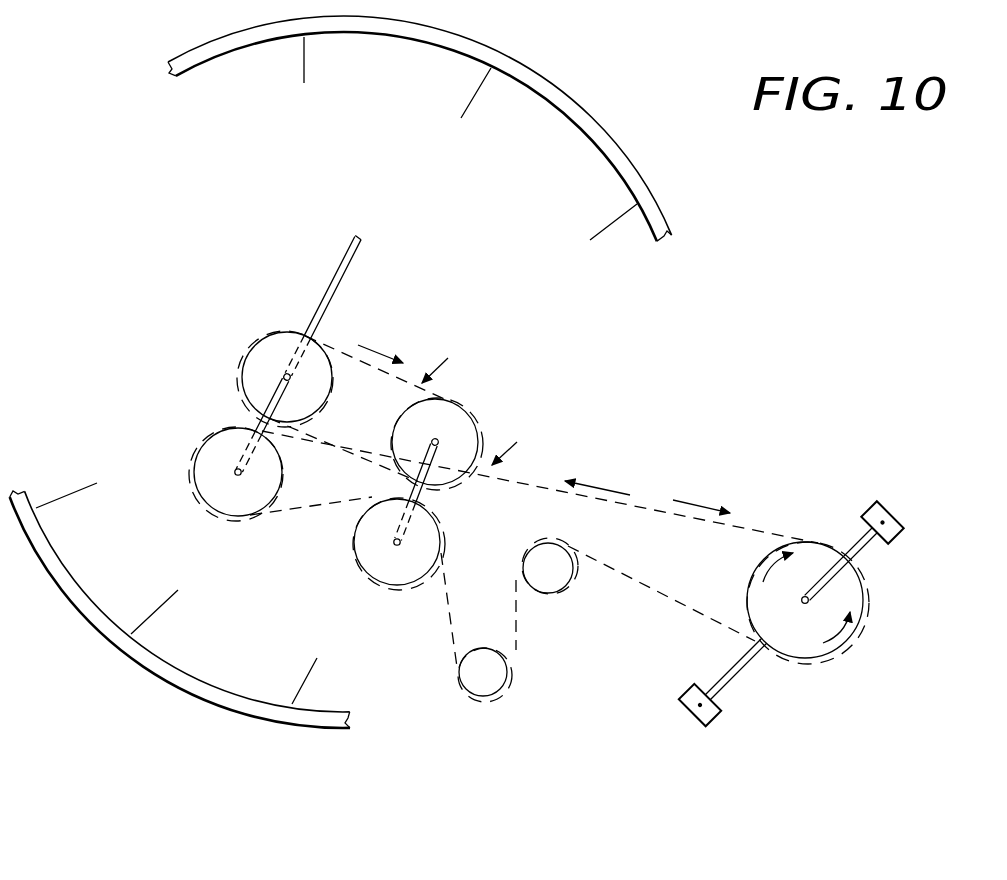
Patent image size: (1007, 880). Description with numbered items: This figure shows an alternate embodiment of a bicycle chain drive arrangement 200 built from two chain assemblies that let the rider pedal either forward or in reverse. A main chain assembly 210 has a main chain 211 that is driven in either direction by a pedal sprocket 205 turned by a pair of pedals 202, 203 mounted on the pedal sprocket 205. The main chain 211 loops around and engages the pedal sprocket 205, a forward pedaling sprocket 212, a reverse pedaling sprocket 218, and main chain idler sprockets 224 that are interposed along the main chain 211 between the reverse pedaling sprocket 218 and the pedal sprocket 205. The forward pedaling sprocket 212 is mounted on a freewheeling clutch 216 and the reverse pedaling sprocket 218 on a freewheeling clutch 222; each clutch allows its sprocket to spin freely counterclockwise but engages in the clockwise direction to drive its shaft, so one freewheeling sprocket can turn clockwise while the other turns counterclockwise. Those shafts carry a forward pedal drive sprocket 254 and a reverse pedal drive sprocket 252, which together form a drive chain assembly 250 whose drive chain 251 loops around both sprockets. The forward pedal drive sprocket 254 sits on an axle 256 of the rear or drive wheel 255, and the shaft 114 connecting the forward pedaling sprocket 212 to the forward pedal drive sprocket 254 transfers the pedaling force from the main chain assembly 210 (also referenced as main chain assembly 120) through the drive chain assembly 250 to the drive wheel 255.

The rear or drive wheel 255 is at (677, 213).
The axle 256 is at (347, 263).
The forward pedal drive sprocket 254 is at (262, 357).
The shaft 114 is at (258, 423).
The freewheeling clutch 216 is at (235, 472).
The forward pedaling sprocket 212 is at (222, 505).
The drive chain 251 is at (341, 346).
The drive chain assembly 250 is at (455, 354).
The reverse pedal drive sprocket 252 is at (442, 413).
The main chain assembly 210 is at (534, 544).
The main chain 211 is at (647, 500).
The main chain assembly 120 is at (425, 493).
The freewheeling clutch 222 is at (394, 542).
The reverse pedaling sprocket 218 is at (395, 565).
The main chain idler sprockets 224 is at (495, 673).
The chain drive arrangement 200 is at (831, 587).
The pedal 203 is at (892, 530).
The pedal sprocket 205 is at (838, 598).
The pedal 202 is at (720, 727).